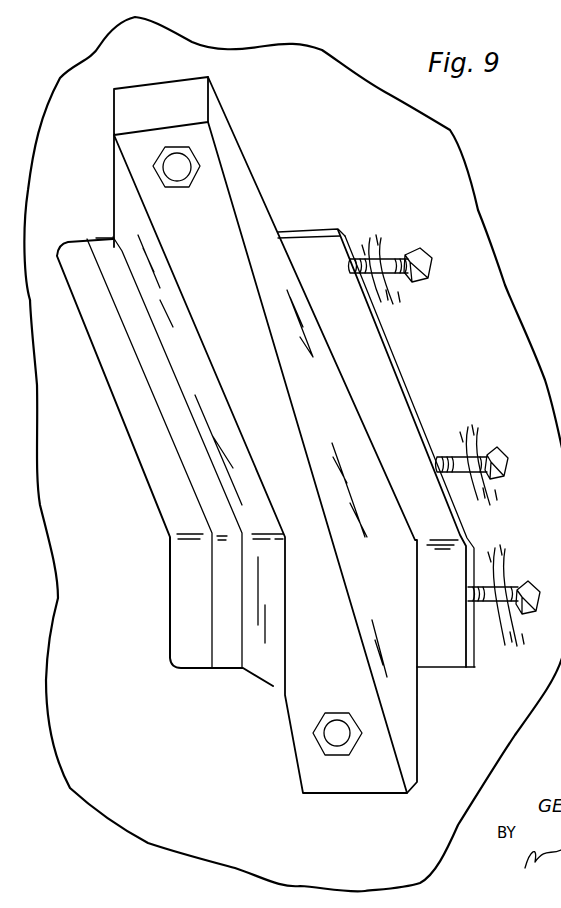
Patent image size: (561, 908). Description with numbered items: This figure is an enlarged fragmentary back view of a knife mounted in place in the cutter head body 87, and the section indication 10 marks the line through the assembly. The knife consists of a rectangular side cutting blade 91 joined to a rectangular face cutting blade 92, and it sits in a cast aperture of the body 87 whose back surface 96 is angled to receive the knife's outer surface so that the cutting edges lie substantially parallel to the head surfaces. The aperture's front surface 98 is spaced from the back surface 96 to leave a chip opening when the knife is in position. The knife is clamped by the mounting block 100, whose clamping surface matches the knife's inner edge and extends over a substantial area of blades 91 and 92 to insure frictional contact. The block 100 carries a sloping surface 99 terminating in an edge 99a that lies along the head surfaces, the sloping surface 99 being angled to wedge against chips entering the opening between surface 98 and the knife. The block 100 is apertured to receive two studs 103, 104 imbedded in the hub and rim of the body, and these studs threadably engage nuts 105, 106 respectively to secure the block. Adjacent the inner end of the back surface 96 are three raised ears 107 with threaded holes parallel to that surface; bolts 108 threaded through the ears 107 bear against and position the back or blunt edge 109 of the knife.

The section line 10 is at (158, 45).
The cutter head body 87 is at (474, 226).
The side cutting blade 91 is at (398, 441).
The face cutting blade 92 is at (452, 614).
The back surface 96 is at (352, 196).
The front surface 98 is at (129, 443).
The sloping surface 99 is at (190, 362).
The edge 99a is at (101, 241).
The mounting block 100 is at (232, 317).
The stud 103 is at (170, 163).
The stud 104 is at (335, 727).
The nut 105 is at (197, 187).
The nut 106 is at (349, 756).
The raised ear 107 is at (383, 253).
The bolt 108 is at (402, 278).
The blunt edge 109 is at (401, 379).